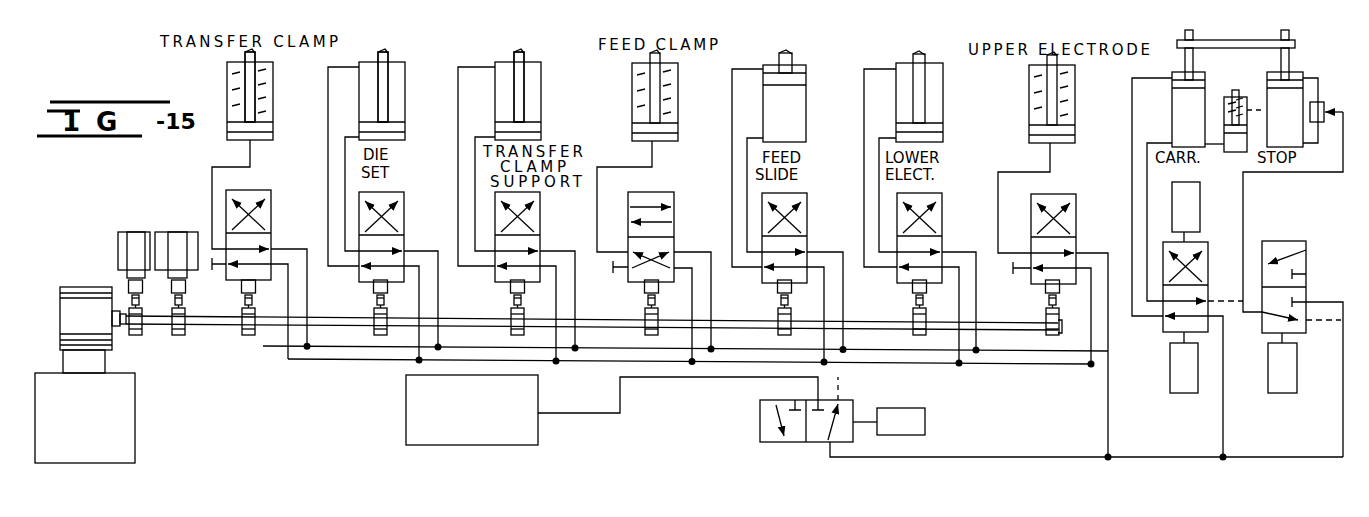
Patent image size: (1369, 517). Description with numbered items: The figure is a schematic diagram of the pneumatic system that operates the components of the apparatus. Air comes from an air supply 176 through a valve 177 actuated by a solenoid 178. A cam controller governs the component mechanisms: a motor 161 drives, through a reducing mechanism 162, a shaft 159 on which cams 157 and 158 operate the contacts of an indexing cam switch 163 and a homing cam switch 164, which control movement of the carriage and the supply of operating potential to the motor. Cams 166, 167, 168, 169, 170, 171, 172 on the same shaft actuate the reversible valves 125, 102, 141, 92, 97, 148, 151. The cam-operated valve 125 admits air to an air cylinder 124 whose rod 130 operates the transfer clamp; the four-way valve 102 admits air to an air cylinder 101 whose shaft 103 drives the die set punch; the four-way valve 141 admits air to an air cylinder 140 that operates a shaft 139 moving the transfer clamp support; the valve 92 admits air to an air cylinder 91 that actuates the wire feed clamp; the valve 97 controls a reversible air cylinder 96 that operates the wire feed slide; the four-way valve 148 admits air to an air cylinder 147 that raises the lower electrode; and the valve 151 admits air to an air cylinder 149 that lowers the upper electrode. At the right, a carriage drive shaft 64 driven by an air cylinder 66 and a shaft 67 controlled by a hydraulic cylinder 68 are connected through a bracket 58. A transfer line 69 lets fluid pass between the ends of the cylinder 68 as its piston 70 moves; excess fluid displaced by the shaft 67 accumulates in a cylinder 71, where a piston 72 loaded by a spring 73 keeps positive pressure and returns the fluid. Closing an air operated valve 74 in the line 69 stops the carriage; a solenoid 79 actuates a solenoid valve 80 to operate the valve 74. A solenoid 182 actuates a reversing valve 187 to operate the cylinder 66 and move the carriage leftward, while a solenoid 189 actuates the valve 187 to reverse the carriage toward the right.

The bracket 58 is at (1210, 45).
The carriage drive shaft 64 is at (1185, 60).
The air cylinder 66 is at (1172, 102).
The shaft 67 is at (1290, 62).
The hydraulic cylinder 68 is at (1292, 148).
The transfer line 69 is at (1324, 104).
The piston 70 is at (1237, 92).
The cylinder 71 is at (1242, 152).
The piston 72 is at (1225, 123).
The spring 73 is at (1285, 109).
The air operated valve 74 is at (1316, 124).
The solenoid 79 is at (1288, 395).
The solenoid valve 80 is at (1306, 272).
The air cylinder 91 is at (678, 105).
The cam-operated valve 92 is at (676, 222).
The reversible air cylinder 96 is at (807, 110).
The reversible valve 97 is at (808, 222).
The air cylinder 101 is at (405, 104).
The cam-operated four-way valve 102 is at (404, 217).
The shaft 103 is at (388, 57).
The air cylinder 124 is at (272, 97).
The cam-operated valve 125 is at (271, 216).
The rod 130 is at (258, 53).
The shaft 139 is at (524, 57).
The air cylinder 140 is at (541, 104).
The cam-operated four-way valve 141 is at (540, 230).
The air cylinder 147 is at (944, 108).
The cam-operated four-way valve 148 is at (942, 222).
The air cylinder 149 is at (1077, 118).
The cam-operated valve 151 is at (1077, 226).
The cam 157 is at (135, 337).
The cam 158 is at (178, 337).
The shaft 159 is at (305, 322).
The motor 161 is at (122, 432).
The reducing mechanism 162 is at (70, 300).
The indexing cam switch 163 is at (134, 240).
The homing cam switch 164 is at (175, 240).
The cam 166 is at (247, 338).
The cam 167 is at (374, 312).
The cam 168 is at (511, 312).
The cam 169 is at (645, 312).
The cam 170 is at (779, 330).
The cam 171 is at (914, 330).
The cam 172 is at (1046, 333).
The air supply 176 is at (406, 406).
The valve 177 is at (760, 421).
The solenoid 178 is at (914, 408).
The solenoid 182 is at (1184, 395).
The reversing valve 187 is at (1208, 272).
The solenoid 189 is at (1202, 210).